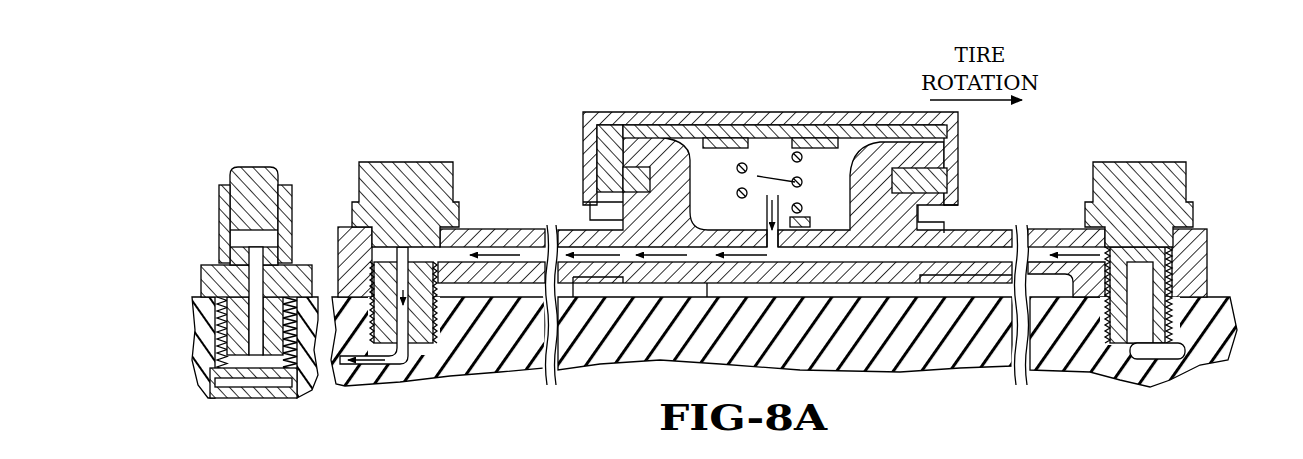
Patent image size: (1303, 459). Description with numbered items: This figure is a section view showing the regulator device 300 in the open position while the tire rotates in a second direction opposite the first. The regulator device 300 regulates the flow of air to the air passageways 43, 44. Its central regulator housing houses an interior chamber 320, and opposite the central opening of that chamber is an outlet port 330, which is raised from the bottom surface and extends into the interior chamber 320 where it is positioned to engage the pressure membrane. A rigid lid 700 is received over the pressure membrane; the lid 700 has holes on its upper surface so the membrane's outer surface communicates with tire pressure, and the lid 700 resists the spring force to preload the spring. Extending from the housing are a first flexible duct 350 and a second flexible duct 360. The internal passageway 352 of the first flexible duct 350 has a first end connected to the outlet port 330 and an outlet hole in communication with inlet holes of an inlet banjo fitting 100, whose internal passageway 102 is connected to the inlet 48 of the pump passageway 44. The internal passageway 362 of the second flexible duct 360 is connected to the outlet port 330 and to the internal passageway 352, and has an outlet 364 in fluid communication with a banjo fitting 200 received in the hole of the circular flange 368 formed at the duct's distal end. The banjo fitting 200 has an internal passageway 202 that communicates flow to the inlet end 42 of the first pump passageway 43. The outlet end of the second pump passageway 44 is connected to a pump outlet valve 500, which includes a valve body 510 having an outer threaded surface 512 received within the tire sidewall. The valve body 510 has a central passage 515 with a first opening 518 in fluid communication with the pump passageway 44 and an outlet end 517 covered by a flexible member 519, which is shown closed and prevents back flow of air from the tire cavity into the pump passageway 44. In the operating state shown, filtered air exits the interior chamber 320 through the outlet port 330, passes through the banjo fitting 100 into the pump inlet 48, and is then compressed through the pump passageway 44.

The pump outlet valve 500 is at (232, 261).
The flexible member 519 is at (292, 222).
The outlet end 517 is at (255, 237).
The central passage 515 is at (252, 300).
The valve body 510 is at (237, 327).
The outer threaded surface 512 is at (237, 377).
The first opening 518 is at (258, 362).
The second pump passageway 44 is at (292, 357).
The inlet banjo fitting 100 is at (449, 239).
The first flexible duct 350 is at (507, 232).
The internal passageway 352 is at (527, 254).
The pump inlet 48 is at (418, 352).
The internal passageway 102 is at (413, 295).
The regulator device 300 is at (768, 170).
The rigid lid 700 is at (658, 112).
The outlet port 330 is at (742, 188).
The interior chamber 320 is at (820, 183).
The internal passageway 362 is at (784, 311).
The second flexible duct 360 is at (1045, 232).
The outlet hole 364 is at (1103, 255).
The banjo fitting 200 is at (1134, 237).
The circular flange 368 is at (1200, 243).
The internal passageway 202 is at (1137, 297).
The inlet end 42 is at (1128, 350).
The first pump passageway 43 is at (1178, 360).